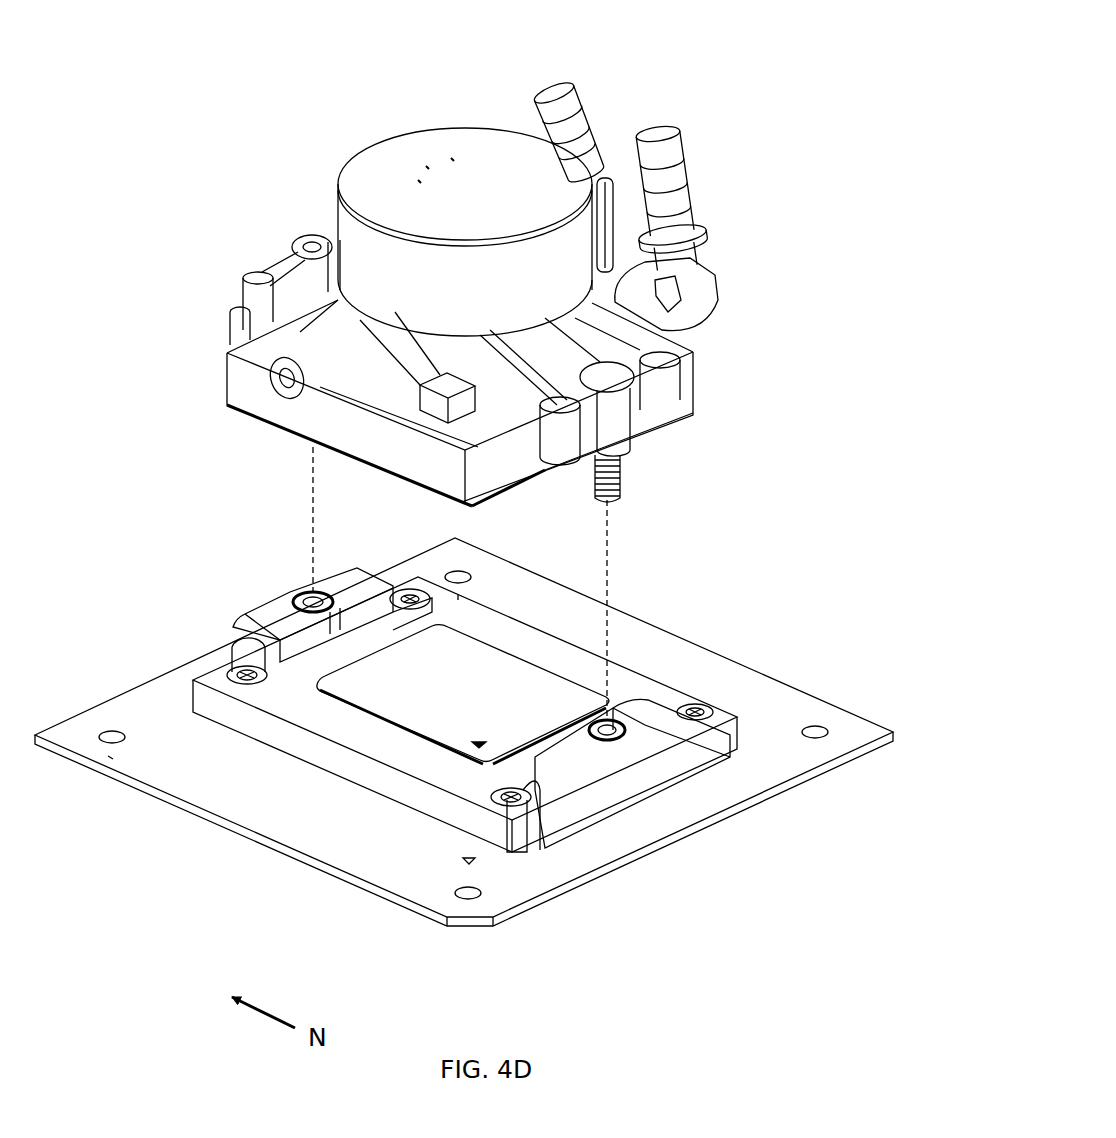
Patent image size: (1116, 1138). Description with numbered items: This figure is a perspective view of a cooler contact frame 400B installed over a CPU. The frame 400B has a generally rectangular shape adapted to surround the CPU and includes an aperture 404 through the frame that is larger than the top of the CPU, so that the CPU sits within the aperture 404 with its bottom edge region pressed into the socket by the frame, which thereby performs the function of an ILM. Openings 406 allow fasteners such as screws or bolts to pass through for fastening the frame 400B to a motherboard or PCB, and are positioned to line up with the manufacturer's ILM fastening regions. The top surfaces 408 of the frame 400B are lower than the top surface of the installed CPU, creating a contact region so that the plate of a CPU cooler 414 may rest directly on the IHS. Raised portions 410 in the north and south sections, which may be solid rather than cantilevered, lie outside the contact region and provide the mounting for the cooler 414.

The CPU cooler 414 is at (713, 130).
The top surfaces 408 is at (513, 638).
The aperture 404 is at (555, 678).
The cooler contact frame 400B is at (657, 662).
The openings 406 is at (402, 588).
The raised portions 410 is at (272, 617).